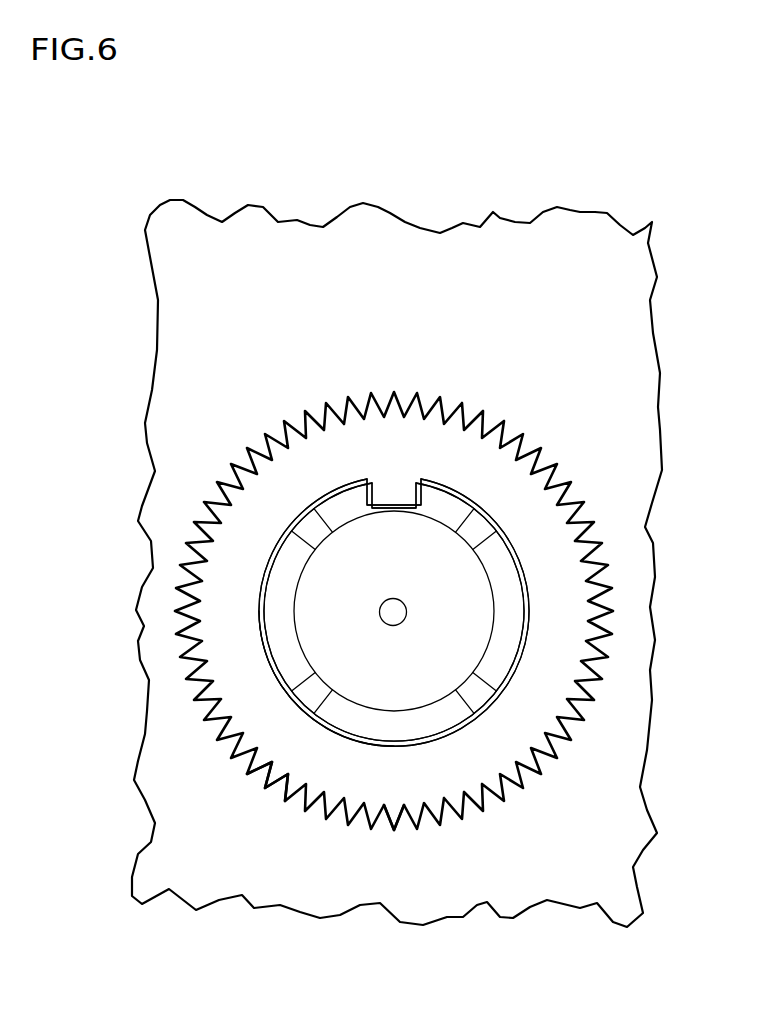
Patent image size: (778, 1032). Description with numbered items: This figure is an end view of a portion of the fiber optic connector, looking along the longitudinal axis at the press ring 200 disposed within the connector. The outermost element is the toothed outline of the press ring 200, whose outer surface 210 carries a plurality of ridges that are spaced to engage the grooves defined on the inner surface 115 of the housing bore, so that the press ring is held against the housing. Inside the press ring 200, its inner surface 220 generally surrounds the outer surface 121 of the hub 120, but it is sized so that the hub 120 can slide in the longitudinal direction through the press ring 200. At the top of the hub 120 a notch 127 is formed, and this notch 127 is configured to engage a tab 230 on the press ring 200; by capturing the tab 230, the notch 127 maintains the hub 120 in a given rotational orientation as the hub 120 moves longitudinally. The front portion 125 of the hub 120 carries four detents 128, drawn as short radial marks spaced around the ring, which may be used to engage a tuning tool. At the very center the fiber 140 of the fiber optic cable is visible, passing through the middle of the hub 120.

The inner surface 115 is at (560, 467).
The hub 120 is at (512, 595).
The outer surface 121 is at (342, 490).
The front portion 125 is at (440, 508).
The notch 127 is at (378, 506).
The detents 128 is at (312, 527).
The fiber 140 is at (407, 615).
The press ring 200 is at (313, 783).
The outer surface 210 is at (388, 840).
The inner surface 220 is at (315, 720).
The tab 230 is at (400, 506).